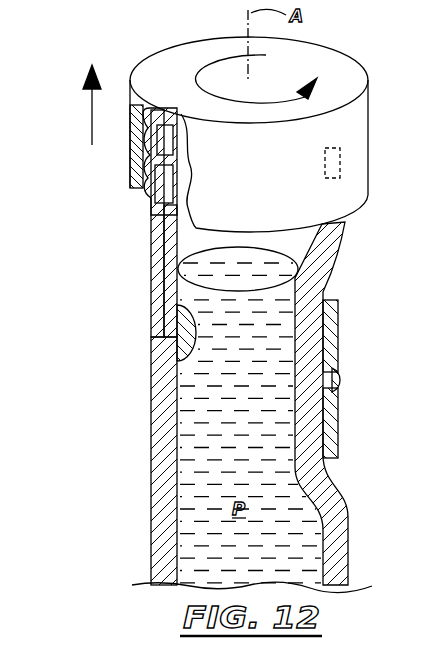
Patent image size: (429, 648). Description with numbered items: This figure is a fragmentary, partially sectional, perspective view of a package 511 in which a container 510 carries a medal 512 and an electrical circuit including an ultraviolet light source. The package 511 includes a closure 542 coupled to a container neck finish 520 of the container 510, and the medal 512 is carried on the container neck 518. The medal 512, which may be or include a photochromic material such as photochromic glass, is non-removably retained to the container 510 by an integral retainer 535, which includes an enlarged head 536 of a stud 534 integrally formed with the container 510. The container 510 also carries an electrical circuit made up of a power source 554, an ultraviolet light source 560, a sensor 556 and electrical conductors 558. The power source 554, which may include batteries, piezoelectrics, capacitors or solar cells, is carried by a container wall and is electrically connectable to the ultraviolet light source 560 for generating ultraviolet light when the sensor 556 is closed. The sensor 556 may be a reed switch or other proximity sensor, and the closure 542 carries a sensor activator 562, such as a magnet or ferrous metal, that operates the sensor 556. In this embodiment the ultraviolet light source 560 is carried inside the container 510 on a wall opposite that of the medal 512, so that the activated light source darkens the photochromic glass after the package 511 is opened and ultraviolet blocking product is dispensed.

The container 510 is at (116, 561).
The package 511 is at (104, 50).
The medal 512 is at (360, 282).
The container neck 518 is at (125, 495).
The container neck finish 520 is at (118, 188).
The stud 534 is at (339, 378).
The integral retainer 535 is at (371, 384).
The enlarged head 536 is at (343, 372).
The closure 542 is at (346, 38).
The power source 554 is at (163, 126).
The sensor 556 is at (172, 172).
The electrical conductor 558 is at (165, 334).
The ultraviolet light source 560 is at (206, 366).
The sensor activator 562 is at (340, 162).